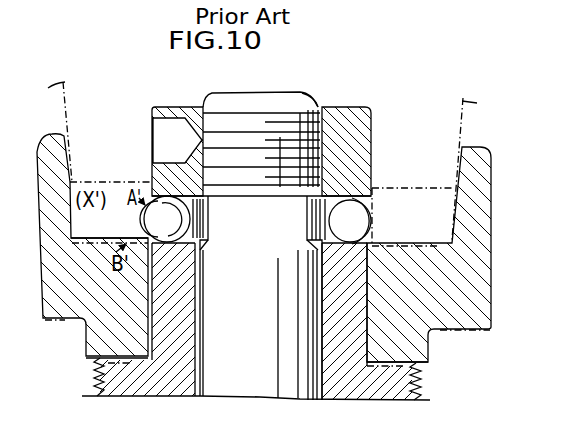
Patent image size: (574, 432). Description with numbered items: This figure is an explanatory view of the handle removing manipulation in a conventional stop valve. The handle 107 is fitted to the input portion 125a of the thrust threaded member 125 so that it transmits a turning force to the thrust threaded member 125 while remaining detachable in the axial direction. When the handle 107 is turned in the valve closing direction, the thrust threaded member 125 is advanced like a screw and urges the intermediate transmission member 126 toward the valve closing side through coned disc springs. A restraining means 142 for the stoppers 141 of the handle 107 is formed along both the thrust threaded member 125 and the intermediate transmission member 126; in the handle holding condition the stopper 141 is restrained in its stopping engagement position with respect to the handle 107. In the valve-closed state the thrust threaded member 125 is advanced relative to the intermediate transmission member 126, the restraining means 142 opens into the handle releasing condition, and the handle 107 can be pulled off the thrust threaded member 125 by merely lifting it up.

The intermediate transmission member 126 is at (273, 92).
The restraining means 142 is at (136, 217).
The stopper 141 is at (142, 227).
The handle 107 is at (458, 157).
The input portion 125a is at (358, 331).
The thrust threaded member 125 is at (422, 383).